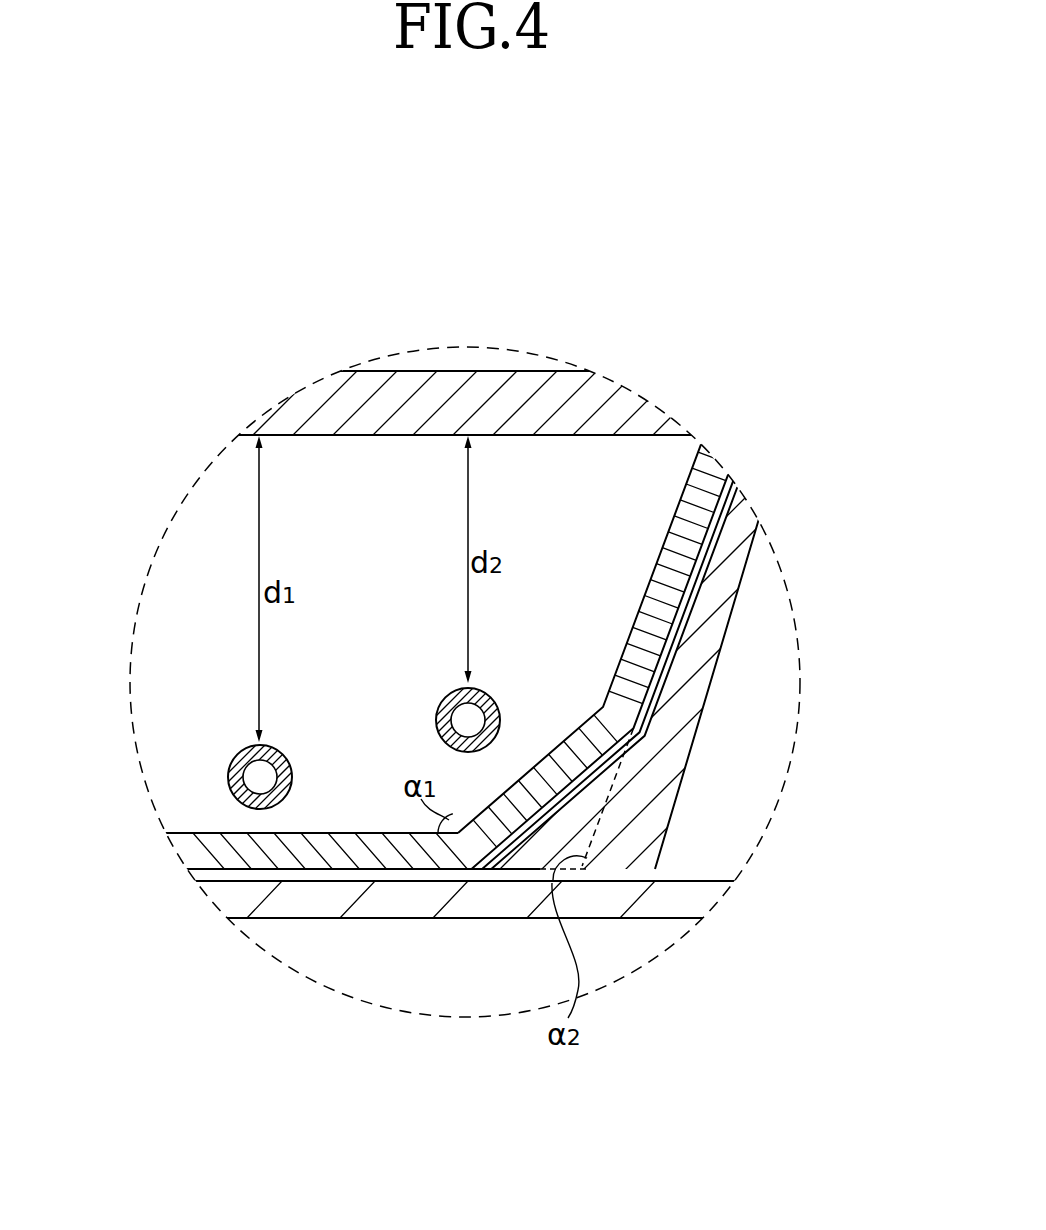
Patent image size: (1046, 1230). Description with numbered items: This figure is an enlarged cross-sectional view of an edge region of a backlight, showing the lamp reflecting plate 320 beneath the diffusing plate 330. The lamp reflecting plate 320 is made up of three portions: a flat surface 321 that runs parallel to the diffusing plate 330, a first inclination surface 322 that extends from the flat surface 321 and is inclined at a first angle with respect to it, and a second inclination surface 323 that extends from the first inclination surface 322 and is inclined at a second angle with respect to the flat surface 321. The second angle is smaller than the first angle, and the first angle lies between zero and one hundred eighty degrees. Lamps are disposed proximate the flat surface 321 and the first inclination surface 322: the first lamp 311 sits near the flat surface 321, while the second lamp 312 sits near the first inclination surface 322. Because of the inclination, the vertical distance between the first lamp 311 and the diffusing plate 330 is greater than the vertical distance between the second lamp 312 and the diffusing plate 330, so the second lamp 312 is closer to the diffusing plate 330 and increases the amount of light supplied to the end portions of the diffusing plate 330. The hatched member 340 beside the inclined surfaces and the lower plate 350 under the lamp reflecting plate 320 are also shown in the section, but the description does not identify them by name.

The diffusing plate 330 is at (303, 397).
The rear substrate 350 is at (233, 912).
The lamp reflecting plate 320 is at (443, 804).
The flat surface 321 is at (358, 852).
The first inclination surface 322 is at (518, 797).
The second inclination surface 323 is at (652, 684).
The barrier rib 340 is at (733, 570).
The first lamp 311 is at (228, 773).
The second lamp 312 is at (487, 690).